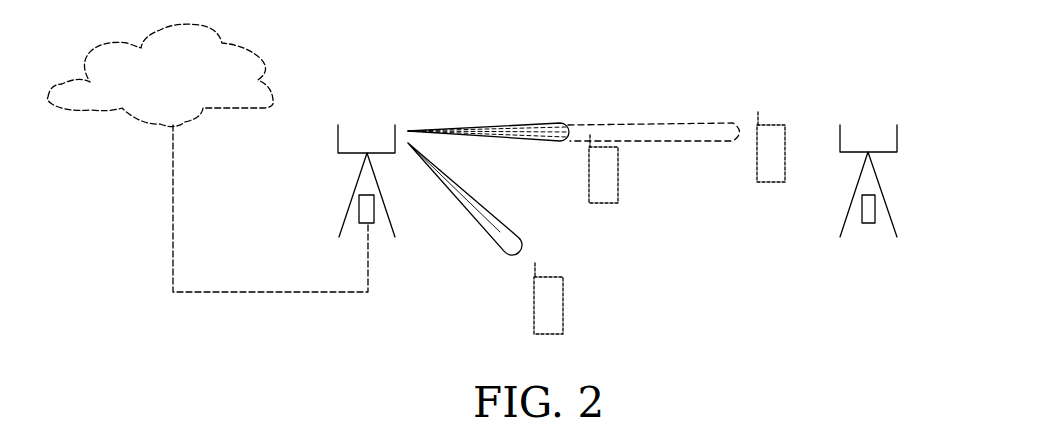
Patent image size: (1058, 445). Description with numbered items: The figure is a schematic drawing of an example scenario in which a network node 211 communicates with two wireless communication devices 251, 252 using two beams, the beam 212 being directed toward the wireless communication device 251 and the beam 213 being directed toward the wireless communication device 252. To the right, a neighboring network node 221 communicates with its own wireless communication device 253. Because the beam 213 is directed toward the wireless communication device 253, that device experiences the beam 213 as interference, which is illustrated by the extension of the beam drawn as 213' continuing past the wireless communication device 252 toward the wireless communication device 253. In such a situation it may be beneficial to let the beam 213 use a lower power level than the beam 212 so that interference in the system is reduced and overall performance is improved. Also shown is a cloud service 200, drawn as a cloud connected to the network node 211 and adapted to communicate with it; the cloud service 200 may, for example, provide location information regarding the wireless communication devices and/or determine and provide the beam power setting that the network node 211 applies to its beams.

The cloud service 200 is at (161, 75).
The network node 211 is at (360, 199).
The beam 212 is at (487, 208).
The beam 213 is at (518, 110).
The interference 213' is at (666, 110).
The neighboring network node 221 is at (873, 208).
The wireless communication device 251 is at (548, 298).
The wireless communication device 252 is at (603, 169).
The wireless communication device 253 is at (771, 147).